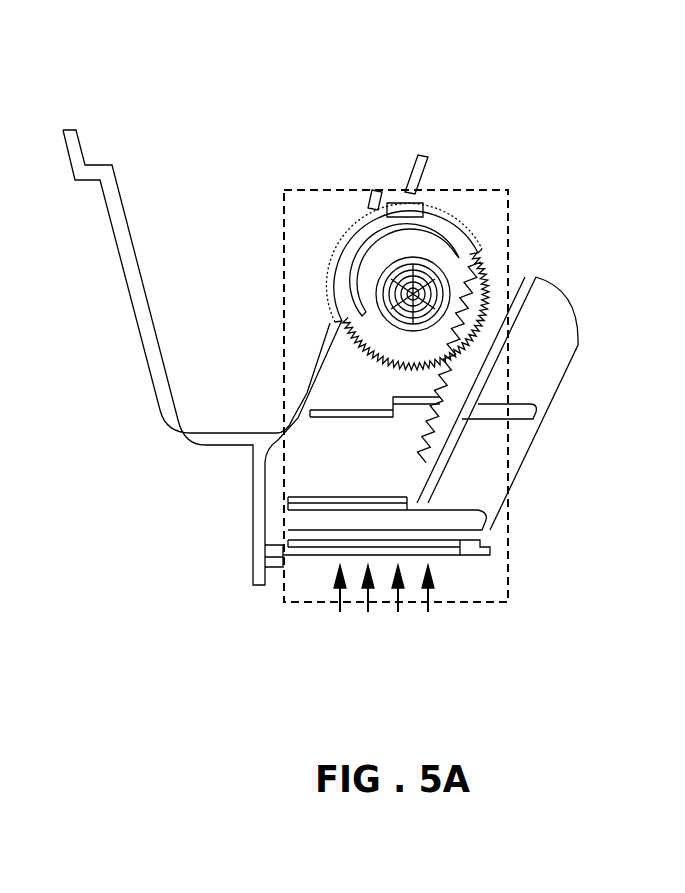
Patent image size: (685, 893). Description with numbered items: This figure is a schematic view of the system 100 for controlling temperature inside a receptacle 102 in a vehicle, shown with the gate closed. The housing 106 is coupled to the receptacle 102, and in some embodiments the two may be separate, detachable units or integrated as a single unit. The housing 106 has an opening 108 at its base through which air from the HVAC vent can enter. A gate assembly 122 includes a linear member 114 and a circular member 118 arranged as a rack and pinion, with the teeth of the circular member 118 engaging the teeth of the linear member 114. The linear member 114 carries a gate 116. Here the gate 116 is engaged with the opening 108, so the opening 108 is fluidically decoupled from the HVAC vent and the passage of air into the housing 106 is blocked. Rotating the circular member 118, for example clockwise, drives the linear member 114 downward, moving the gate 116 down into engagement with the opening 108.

The system 100 is at (438, 47).
The receptacle 102 is at (138, 318).
The housing 106 is at (527, 452).
The opening 108 is at (337, 557).
The linear member 114 is at (488, 337).
The gate 116 is at (428, 540).
The circular member 118 is at (443, 220).
The gate assembly 122 is at (510, 240).